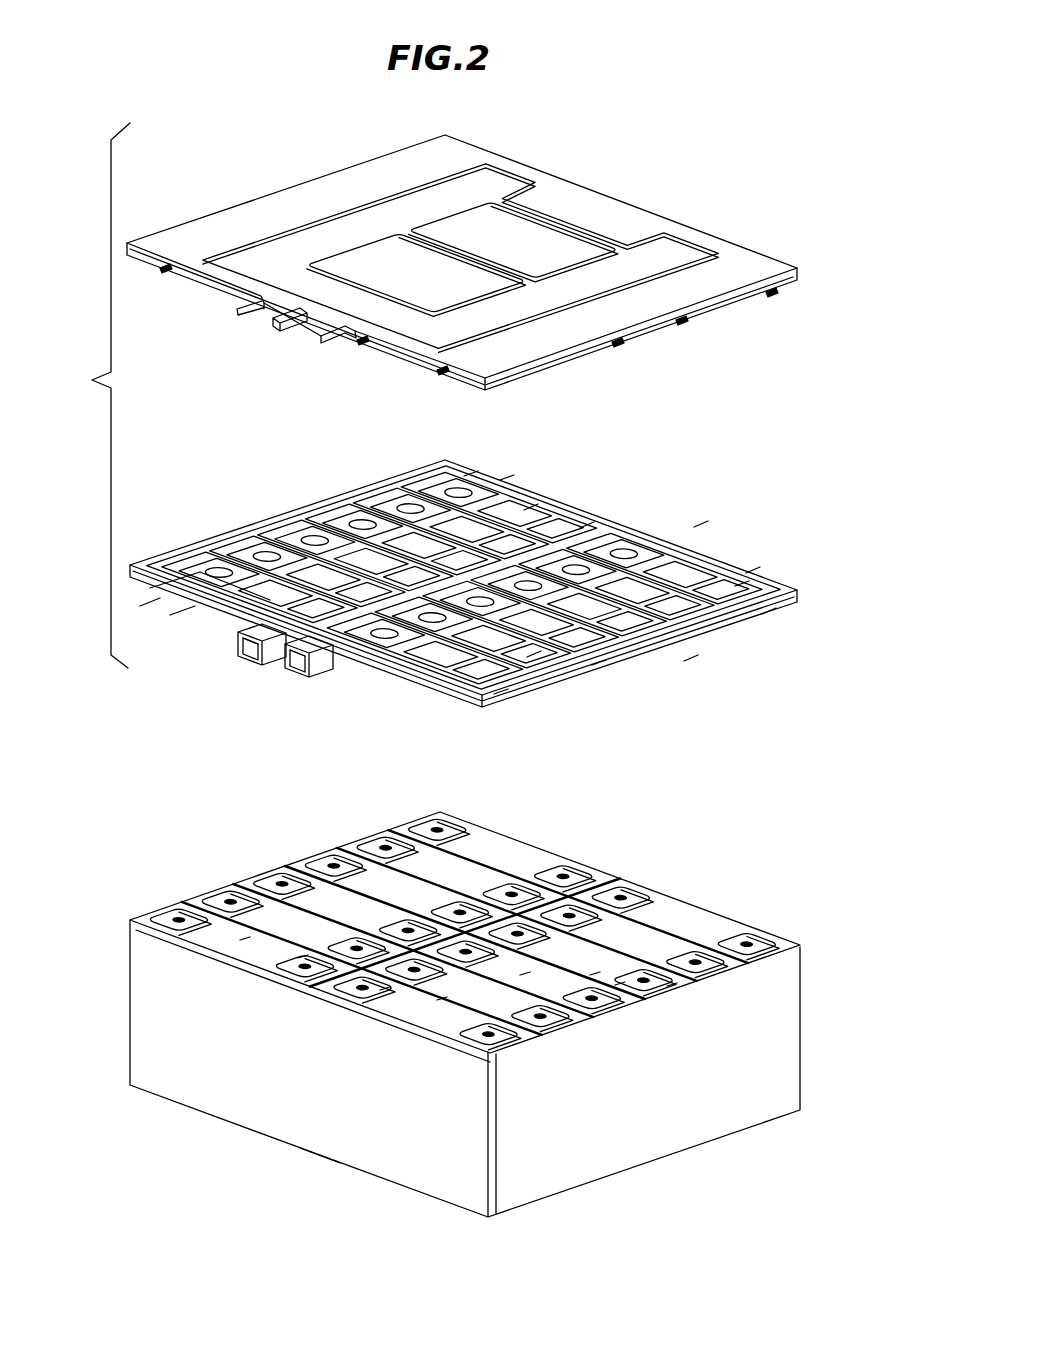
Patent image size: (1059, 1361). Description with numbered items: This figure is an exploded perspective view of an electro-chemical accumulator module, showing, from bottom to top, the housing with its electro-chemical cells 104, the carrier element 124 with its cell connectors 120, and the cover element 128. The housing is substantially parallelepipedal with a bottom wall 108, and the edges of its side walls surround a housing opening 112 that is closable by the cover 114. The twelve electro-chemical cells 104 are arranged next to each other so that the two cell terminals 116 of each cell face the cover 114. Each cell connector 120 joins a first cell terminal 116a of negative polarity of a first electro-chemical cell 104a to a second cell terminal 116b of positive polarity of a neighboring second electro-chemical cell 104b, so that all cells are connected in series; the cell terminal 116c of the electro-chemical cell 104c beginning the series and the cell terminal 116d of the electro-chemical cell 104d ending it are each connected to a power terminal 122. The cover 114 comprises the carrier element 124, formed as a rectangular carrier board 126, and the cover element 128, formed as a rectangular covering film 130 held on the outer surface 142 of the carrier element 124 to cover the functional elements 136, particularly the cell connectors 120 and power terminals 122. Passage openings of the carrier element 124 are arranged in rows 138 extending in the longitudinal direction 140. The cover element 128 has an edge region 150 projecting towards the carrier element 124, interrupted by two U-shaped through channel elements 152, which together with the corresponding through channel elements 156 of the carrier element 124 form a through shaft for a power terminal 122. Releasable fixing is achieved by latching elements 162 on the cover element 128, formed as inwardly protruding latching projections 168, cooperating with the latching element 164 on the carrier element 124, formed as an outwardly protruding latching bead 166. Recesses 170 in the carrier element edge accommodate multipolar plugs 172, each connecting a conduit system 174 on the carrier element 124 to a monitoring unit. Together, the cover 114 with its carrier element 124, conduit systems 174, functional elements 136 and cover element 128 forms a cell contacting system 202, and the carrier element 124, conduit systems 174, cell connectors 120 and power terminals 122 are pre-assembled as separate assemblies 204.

The cover 114 is at (80, 395).
The cover element 128 is at (713, 230).
The covering film 130 is at (580, 203).
The edge region 150 is at (771, 295).
The latching projections 168 is at (617, 345).
The latching elements 162 is at (441, 373).
The through channel elements 152 is at (310, 327).
The carrier element 124 is at (726, 556).
The cell connectors 120 is at (638, 630).
The power terminal 122 is at (262, 668).
The through channel elements 156 is at (307, 672).
The functional elements 136 is at (368, 662).
The recesses 170 is at (422, 698).
The plug 172 is at (398, 690).
The rows 138 is at (778, 613).
The conduit system 174 is at (498, 693).
The outer surface 142 is at (531, 507).
The cell contacting system 202 is at (699, 523).
The separate assemblies 204 is at (753, 571).
The carrier board 126 is at (742, 584).
The longitudinal direction 140 is at (730, 637).
The latching element 164 is at (599, 663).
The latching bead 166 is at (535, 655).
The housing opening 112 is at (680, 917).
The electro-chemical cells 104 is at (468, 883).
The cell terminals 116 is at (736, 943).
The first electro-chemical cell 104a is at (526, 977).
The second electro-chemical cell 104b is at (622, 986).
The electro-chemical cell 104c is at (246, 942).
The electro-chemical cell 104d is at (443, 1002).
The first cell terminal 116a is at (596, 977).
The second cell terminal 116b is at (673, 986).
The cell terminal 116c is at (303, 963).
The cell terminal 116d is at (386, 994).
The bottom wall 108 is at (320, 1160).